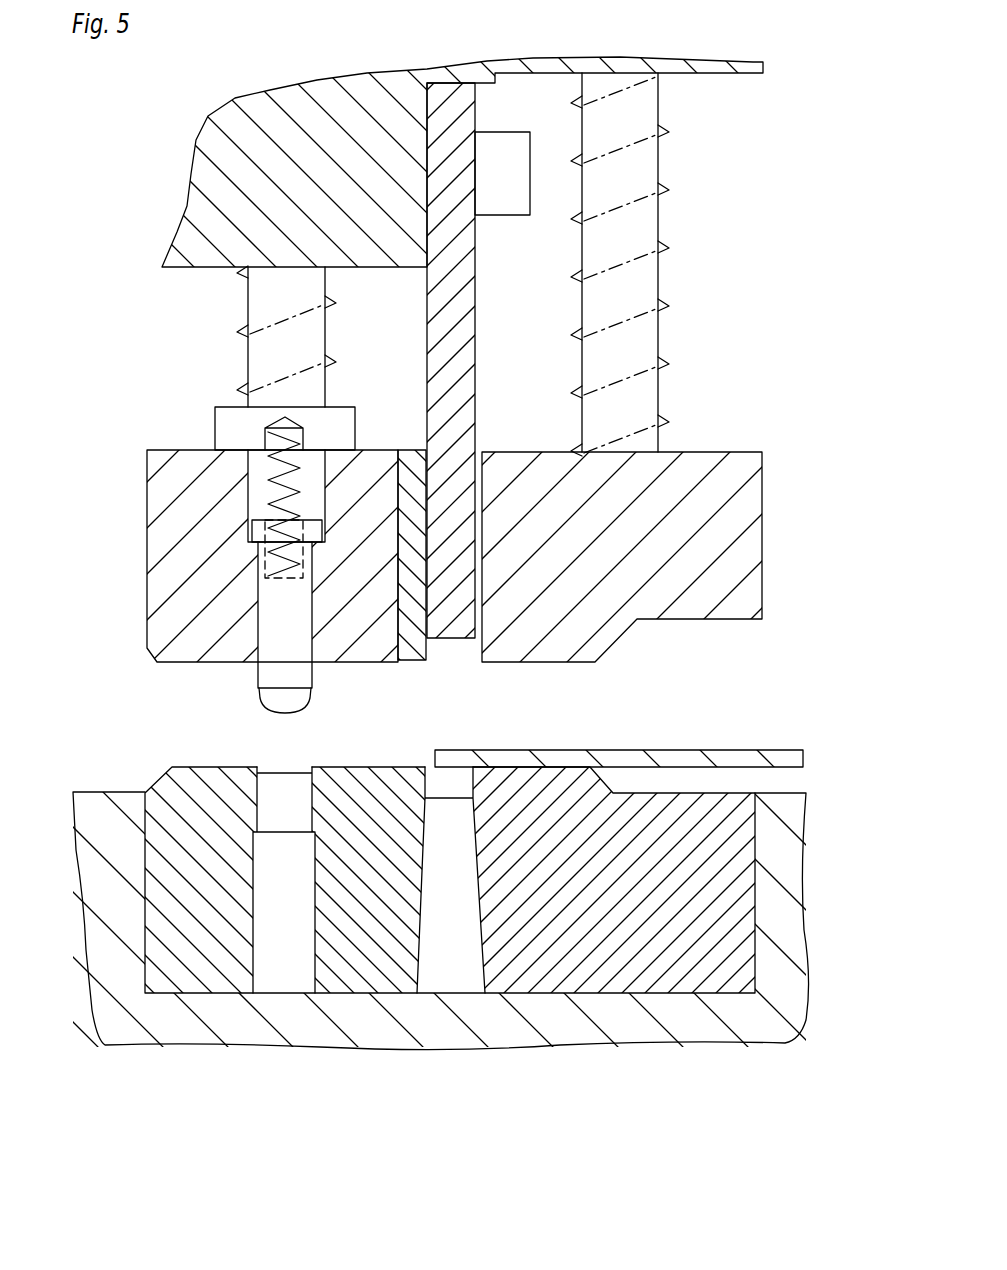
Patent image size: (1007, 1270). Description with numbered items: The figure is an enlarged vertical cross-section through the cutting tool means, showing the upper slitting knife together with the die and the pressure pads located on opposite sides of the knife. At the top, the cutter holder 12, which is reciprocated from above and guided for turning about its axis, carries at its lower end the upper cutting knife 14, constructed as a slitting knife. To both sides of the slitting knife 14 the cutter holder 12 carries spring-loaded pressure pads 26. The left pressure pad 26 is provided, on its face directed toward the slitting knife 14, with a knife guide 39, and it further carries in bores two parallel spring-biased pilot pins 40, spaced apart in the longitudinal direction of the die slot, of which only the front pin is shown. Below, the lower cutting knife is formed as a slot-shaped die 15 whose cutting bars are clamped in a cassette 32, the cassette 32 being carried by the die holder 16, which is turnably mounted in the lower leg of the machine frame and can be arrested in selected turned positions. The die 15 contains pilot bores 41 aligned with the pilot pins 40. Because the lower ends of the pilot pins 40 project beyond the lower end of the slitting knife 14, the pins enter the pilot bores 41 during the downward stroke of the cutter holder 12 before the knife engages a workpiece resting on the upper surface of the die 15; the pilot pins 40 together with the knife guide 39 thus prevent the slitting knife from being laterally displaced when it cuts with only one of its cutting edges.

The cutter holder 12 is at (187, 239).
The upper cutting knife 14 is at (465, 401).
The die 15 is at (558, 785).
The die holder 16 is at (503, 996).
The pressure pad 26 is at (680, 493).
The cassette 32 is at (358, 1030).
The knife guide 39 is at (413, 450).
The pilot pin 40 is at (265, 642).
The pilot bore 41 is at (272, 787).